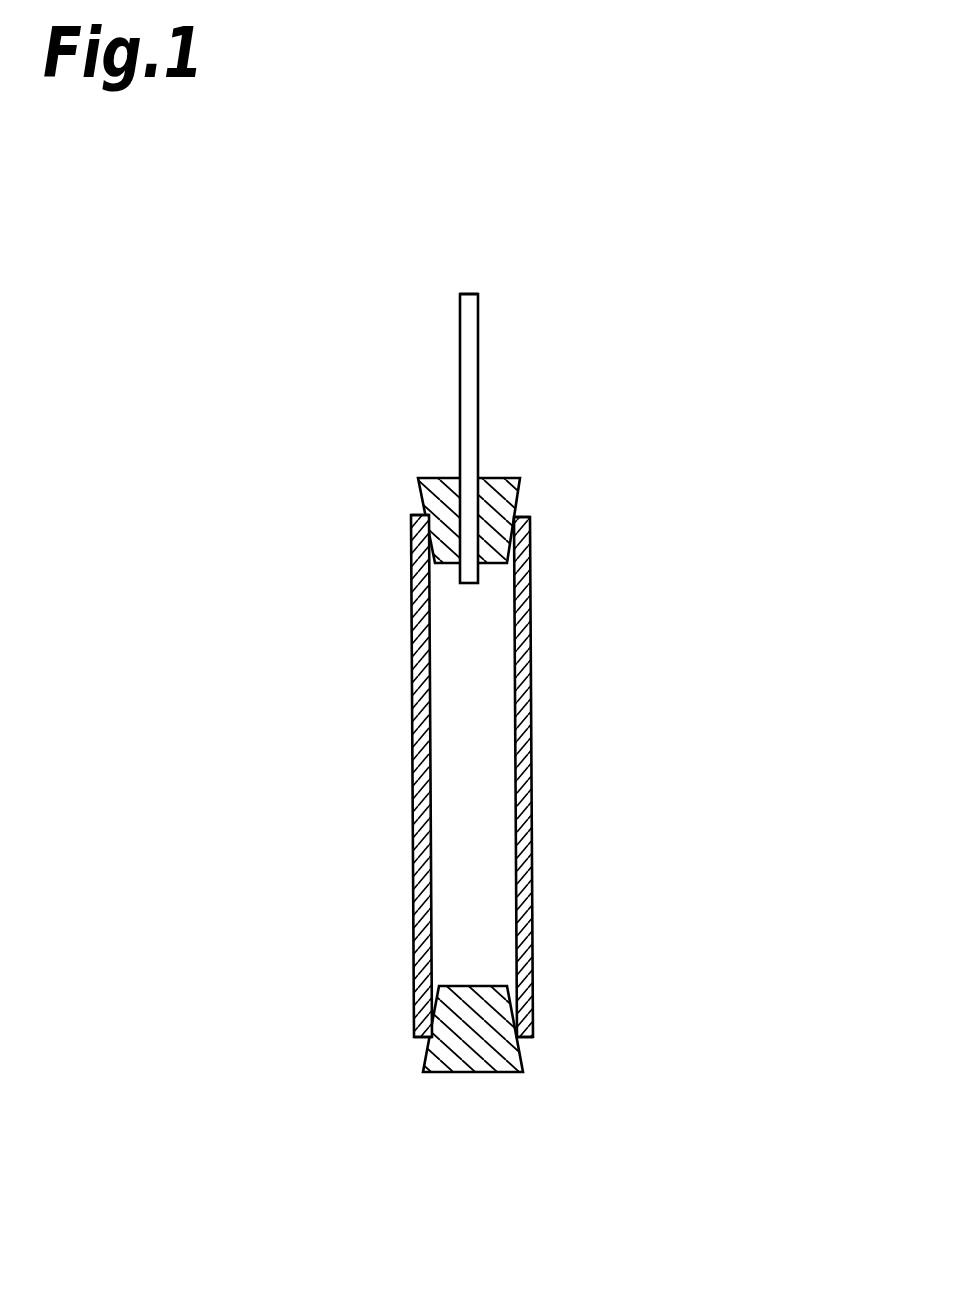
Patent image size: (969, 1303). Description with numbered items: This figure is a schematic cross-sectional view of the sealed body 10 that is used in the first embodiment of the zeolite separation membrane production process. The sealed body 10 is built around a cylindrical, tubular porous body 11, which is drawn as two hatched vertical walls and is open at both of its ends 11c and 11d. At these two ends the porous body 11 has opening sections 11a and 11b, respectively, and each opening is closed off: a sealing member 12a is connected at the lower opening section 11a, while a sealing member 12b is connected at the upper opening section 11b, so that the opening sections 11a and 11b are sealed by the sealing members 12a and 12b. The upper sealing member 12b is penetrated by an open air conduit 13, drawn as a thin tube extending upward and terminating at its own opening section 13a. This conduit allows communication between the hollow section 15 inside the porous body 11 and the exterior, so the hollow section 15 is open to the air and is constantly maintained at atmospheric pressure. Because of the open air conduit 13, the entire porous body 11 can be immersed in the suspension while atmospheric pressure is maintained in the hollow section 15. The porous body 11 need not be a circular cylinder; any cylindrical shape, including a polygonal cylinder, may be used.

The sealed body 10 is at (770, 208).
The porous body 11 is at (532, 723).
The opening section 11a is at (525, 1040).
The opening section 11b is at (525, 507).
The end of porous body 11c is at (415, 1013).
The end of porous body 11d is at (410, 542).
The sealing member 12a is at (478, 1067).
The sealing member 12b is at (507, 483).
The open air conduit 13 is at (458, 303).
The opening section 13a is at (477, 283).
The hollow section 15 is at (450, 778).